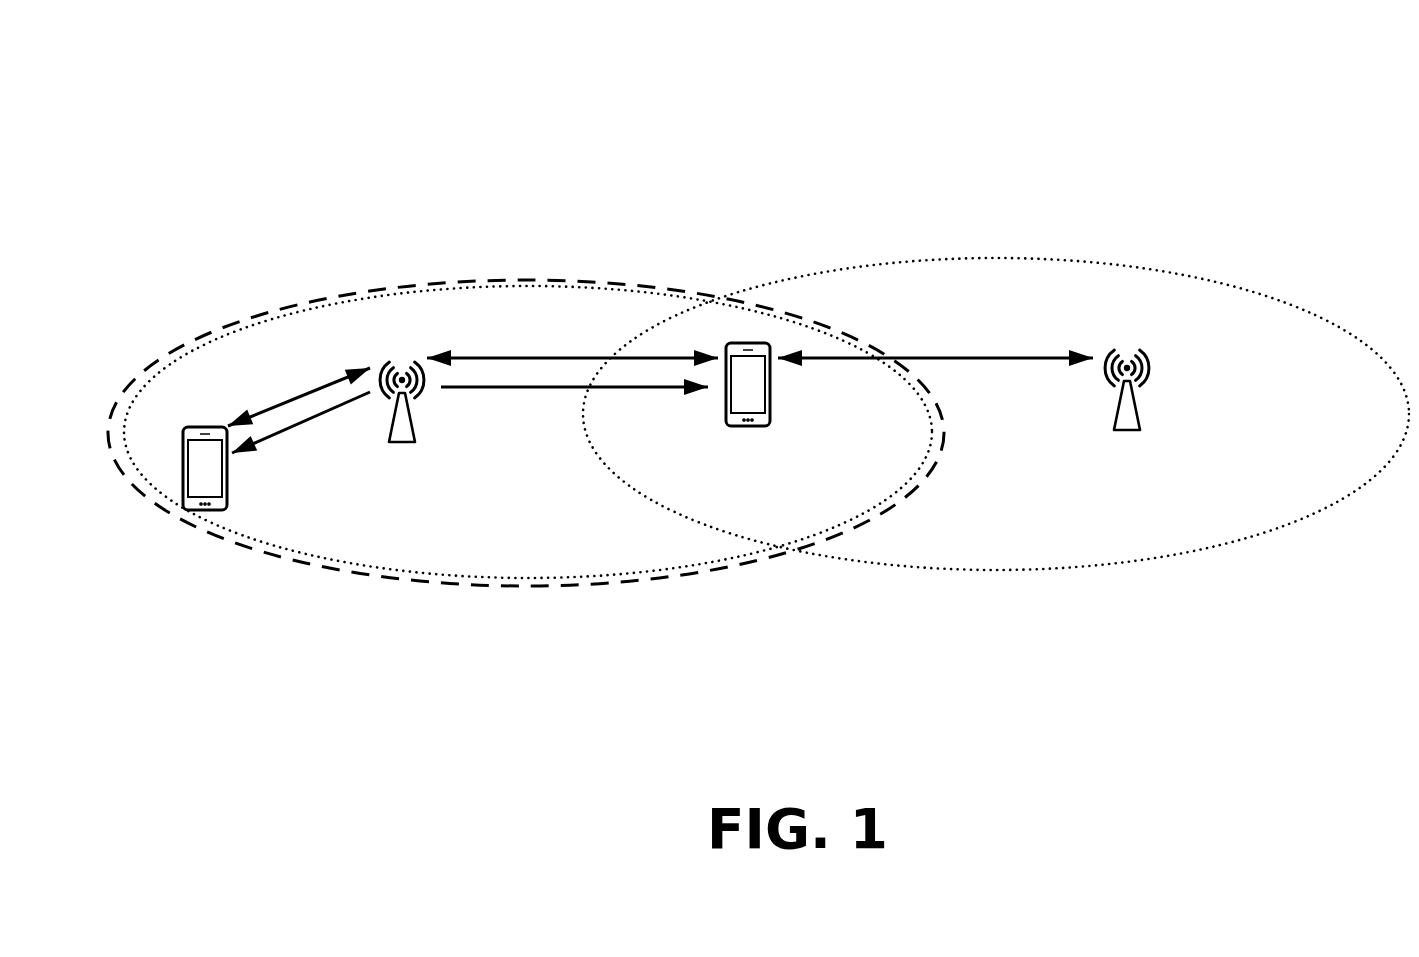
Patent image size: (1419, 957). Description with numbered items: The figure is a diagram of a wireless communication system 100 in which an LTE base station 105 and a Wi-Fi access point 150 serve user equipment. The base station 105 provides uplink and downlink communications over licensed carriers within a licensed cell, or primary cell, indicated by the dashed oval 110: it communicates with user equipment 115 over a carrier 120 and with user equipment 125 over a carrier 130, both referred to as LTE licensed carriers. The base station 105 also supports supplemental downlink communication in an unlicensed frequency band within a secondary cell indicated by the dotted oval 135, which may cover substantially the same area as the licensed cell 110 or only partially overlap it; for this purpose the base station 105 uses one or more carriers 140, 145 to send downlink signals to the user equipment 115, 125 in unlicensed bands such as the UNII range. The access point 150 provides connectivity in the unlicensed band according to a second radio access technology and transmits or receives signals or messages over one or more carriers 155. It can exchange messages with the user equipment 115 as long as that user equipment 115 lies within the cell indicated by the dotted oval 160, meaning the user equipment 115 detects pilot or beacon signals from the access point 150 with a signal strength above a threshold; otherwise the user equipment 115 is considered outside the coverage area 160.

The wireless communication system 100 is at (1258, 134).
The base station 105 is at (400, 445).
The dashed oval 110 is at (145, 360).
The user equipment 115 is at (757, 427).
The carrier 120 is at (475, 355).
The user equipment 125 is at (228, 497).
The carrier 130 is at (308, 392).
The dotted oval 135 is at (128, 472).
The carrier 140 is at (567, 389).
The carrier 145 is at (300, 422).
The access point 150 is at (1123, 429).
The carrier 155 is at (943, 356).
The dotted oval 160 is at (1062, 260).